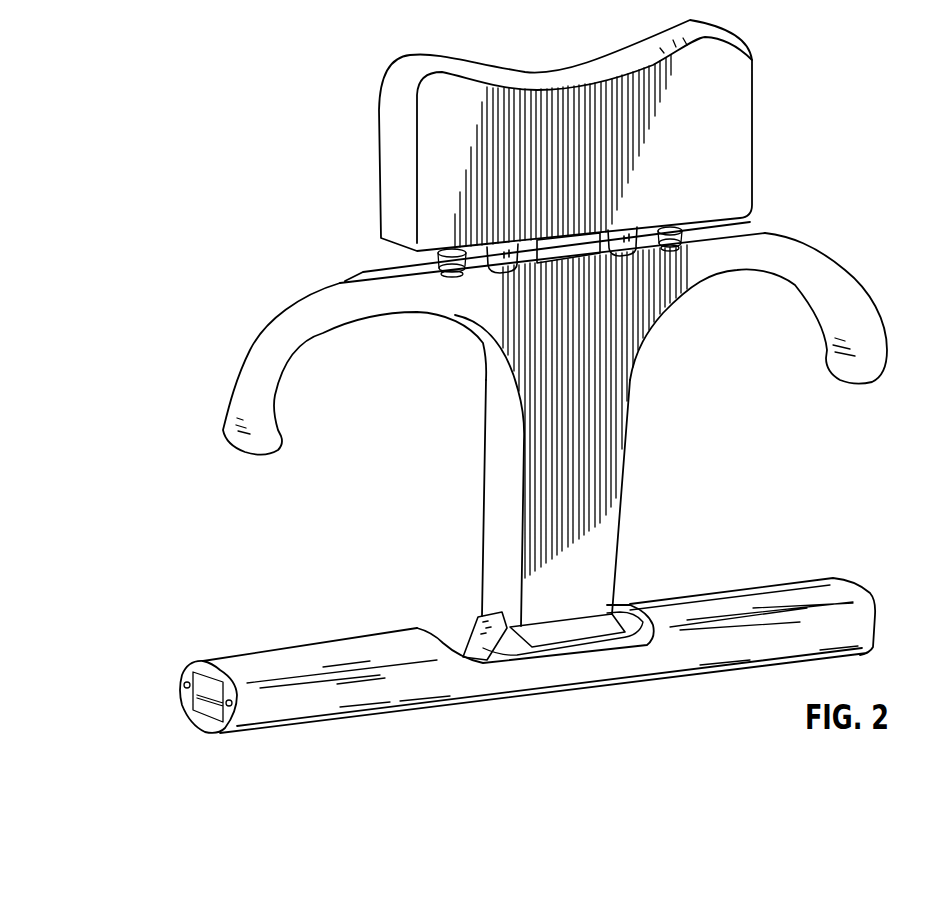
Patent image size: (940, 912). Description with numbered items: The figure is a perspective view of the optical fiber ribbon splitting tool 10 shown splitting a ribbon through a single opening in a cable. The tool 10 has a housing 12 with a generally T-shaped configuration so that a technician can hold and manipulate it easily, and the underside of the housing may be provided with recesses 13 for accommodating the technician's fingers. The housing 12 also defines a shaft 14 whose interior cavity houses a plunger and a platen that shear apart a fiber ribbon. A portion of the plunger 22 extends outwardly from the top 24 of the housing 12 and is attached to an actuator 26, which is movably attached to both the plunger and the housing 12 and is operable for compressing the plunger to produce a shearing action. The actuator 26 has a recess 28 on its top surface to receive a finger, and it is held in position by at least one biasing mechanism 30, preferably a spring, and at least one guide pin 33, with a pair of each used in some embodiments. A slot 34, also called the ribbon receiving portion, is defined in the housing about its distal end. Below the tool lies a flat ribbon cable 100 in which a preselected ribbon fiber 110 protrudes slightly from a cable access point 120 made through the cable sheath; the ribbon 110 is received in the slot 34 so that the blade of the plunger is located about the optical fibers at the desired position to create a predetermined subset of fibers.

The optical fiber ribbon splitting tool 10 is at (816, 100).
The housing 12 is at (884, 300).
The recesses 13 is at (731, 415).
The shaft 14 is at (484, 498).
The portion of the plunger 22 is at (742, 230).
The top of the housing 24 is at (283, 357).
The actuator 26 is at (393, 182).
The recess 28 is at (638, 60).
The biasing mechanism 30 is at (363, 272).
The guide pin 33 is at (503, 272).
The slot 34 is at (553, 625).
The ribbon cable 100 is at (817, 597).
The ribbon fiber 110 is at (475, 643).
The cable access point 120 is at (428, 622).